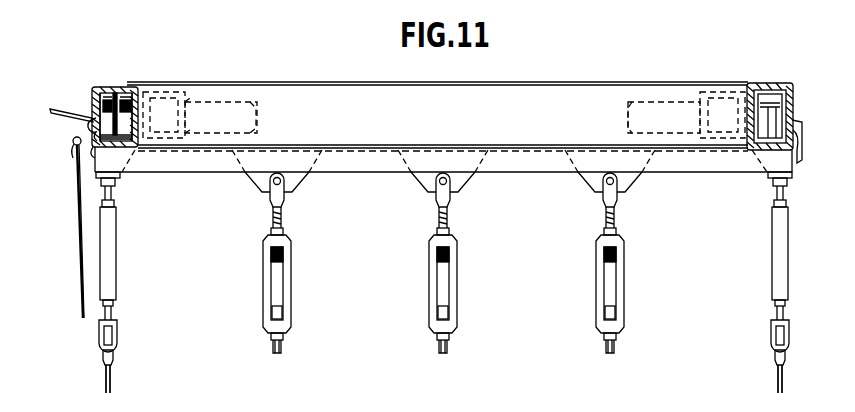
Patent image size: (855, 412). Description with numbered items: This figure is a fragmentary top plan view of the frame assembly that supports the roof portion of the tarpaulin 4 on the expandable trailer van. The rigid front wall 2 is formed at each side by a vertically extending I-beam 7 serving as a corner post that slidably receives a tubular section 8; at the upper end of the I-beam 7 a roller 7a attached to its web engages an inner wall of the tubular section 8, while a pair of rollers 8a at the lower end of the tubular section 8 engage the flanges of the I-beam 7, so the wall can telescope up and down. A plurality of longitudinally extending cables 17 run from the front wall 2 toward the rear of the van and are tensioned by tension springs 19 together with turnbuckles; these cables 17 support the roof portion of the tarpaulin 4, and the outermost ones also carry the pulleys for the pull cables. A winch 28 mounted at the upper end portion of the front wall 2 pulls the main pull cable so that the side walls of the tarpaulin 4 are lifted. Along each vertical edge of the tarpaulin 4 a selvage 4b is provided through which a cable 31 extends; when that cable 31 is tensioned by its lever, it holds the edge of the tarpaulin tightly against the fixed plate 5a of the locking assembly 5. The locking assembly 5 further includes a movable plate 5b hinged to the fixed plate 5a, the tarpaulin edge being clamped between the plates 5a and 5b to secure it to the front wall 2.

The front wall 2 is at (534, 81).
The tarpaulin 4 is at (78, 268).
The selvage 4b is at (75, 145).
The locking assembly 5 is at (802, 149).
The fixed plate 5a is at (104, 160).
The movable plate 5b is at (56, 108).
The I-beam 7 is at (97, 122).
The roller 7a is at (772, 97).
The tubular section 8 is at (121, 87).
The rollers 8a is at (100, 95).
The cables 17 is at (114, 382).
The tension springs 19 is at (117, 231).
The winch 28 is at (183, 86).
The cable 31 is at (64, 149).